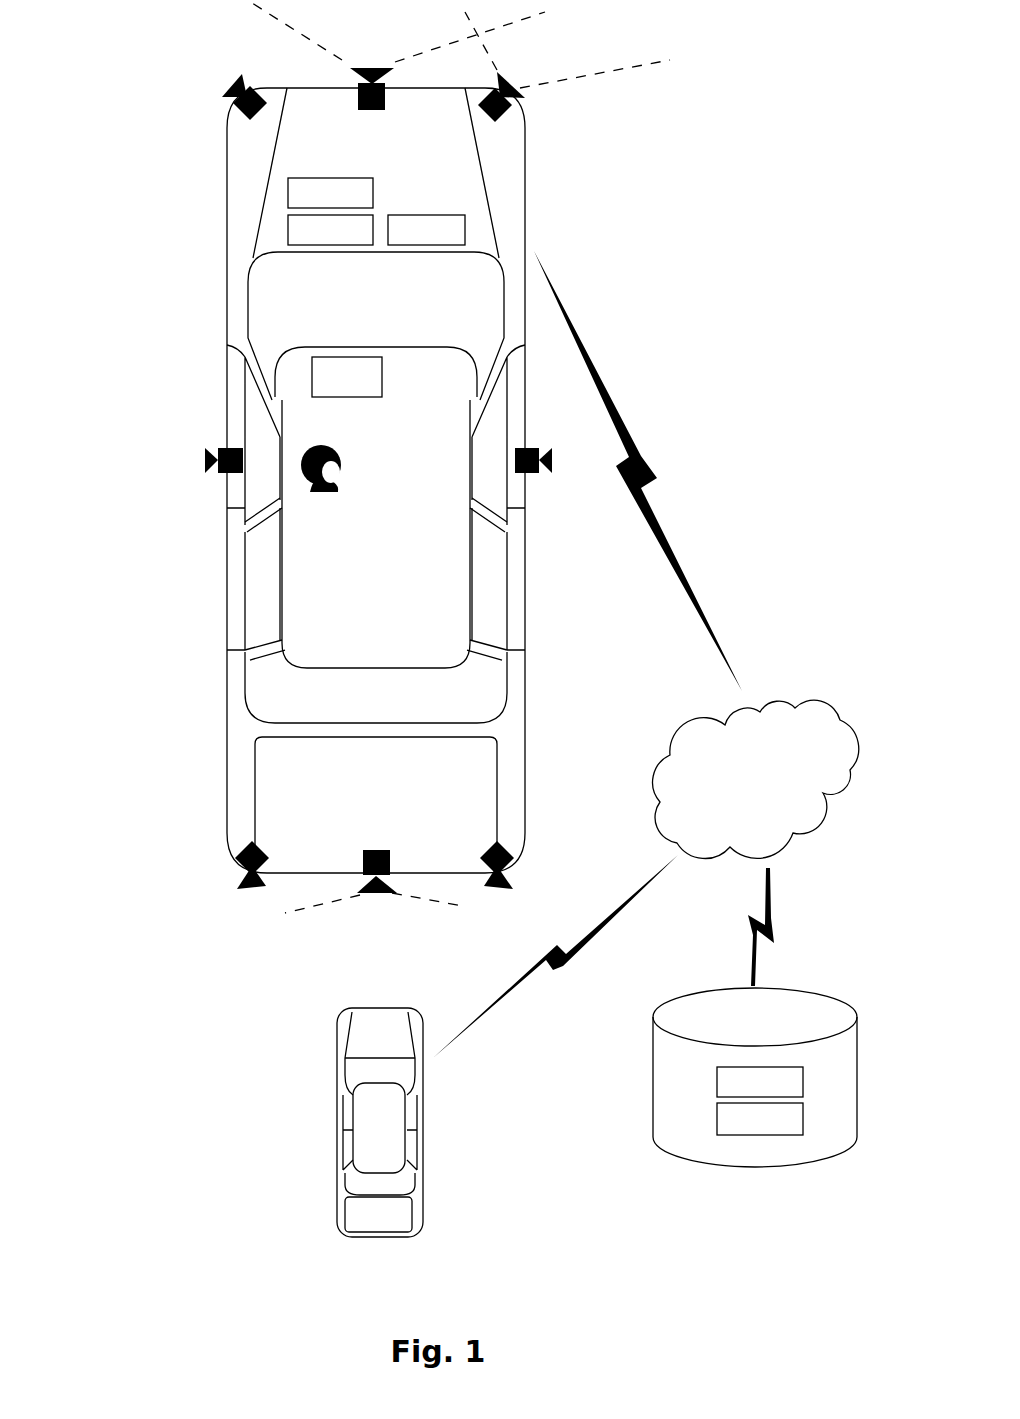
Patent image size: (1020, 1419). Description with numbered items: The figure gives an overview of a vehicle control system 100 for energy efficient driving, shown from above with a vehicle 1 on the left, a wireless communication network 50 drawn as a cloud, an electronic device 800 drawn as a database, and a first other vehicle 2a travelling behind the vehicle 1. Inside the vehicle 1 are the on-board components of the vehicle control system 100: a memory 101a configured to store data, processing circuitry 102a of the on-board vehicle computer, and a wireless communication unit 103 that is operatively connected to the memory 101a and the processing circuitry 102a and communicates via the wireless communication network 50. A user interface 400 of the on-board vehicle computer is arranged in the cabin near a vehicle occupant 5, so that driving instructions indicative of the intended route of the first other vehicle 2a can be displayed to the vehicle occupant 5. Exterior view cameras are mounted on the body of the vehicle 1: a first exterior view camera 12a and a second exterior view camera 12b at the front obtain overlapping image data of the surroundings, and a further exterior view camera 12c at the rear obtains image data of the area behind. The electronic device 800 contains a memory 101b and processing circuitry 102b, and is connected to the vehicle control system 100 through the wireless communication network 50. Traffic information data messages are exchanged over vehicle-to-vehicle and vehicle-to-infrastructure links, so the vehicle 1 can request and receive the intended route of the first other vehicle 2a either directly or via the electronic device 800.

The vehicle control system 100 is at (150, 132).
The vehicle 1 is at (536, 195).
The first exterior view camera 12a is at (353, 115).
The second exterior view camera 12b is at (530, 111).
The exterior view camera 12c is at (361, 843).
The memory 101a is at (330, 193).
The processing circuitry 102a is at (330, 230).
The wireless communication unit 103 is at (426, 230).
The user interface 400 is at (347, 377).
The vehicle occupant 5 is at (321, 490).
The wireless communication network 50 is at (756, 779).
The electronic device 800 is at (755, 1077).
The memory 101b is at (760, 1082).
The processing circuitry 102b is at (760, 1119).
The first other vehicle 2a is at (434, 1152).